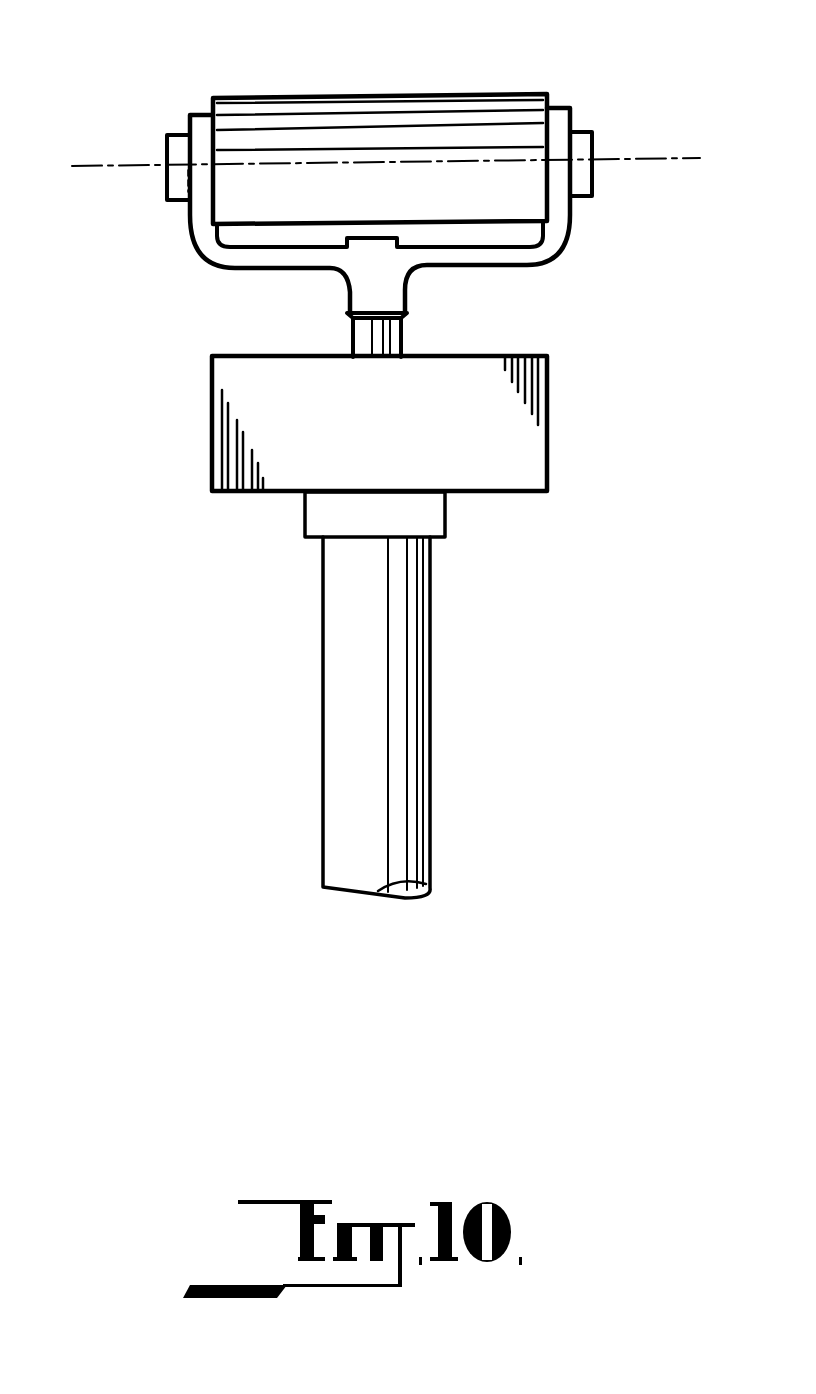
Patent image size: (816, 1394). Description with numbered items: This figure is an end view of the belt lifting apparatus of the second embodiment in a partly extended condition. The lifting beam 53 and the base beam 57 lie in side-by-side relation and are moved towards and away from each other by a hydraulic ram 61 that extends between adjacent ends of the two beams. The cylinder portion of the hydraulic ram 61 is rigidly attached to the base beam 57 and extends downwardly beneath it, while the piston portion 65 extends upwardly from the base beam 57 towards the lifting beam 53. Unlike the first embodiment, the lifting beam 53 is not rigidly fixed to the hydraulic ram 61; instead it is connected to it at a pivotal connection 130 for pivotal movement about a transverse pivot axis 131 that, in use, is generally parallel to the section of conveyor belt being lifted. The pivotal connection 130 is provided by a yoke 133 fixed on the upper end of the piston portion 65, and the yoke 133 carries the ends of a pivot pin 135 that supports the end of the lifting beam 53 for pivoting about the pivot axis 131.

The lifting beam 53 is at (498, 115).
The base beam 57 is at (537, 453).
The hydraulic ram 61 is at (432, 735).
The piston portion 65 is at (403, 337).
The pivotal connection 130 is at (180, 130).
The pivot axis 131 is at (97, 166).
The yoke 133 is at (563, 247).
The pivot pin 135 is at (582, 133).